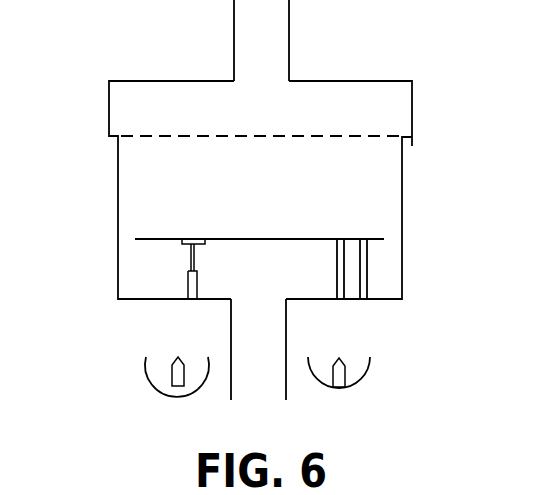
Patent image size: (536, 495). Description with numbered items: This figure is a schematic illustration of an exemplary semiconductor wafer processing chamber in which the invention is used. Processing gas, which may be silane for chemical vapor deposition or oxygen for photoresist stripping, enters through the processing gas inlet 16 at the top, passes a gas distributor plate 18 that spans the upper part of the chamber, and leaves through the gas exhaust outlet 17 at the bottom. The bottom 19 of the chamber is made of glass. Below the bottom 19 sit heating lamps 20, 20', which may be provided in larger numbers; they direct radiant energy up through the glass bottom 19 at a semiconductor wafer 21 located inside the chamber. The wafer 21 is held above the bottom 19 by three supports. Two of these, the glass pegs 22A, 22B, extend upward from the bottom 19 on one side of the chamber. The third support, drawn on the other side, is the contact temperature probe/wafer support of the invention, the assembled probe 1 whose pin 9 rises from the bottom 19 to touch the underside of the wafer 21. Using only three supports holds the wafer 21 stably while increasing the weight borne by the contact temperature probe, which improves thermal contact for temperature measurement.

The processing gas inlet 16 is at (290, 18).
The gas distributor plate 18 is at (358, 137).
The semiconductor wafer 21 is at (156, 238).
The membrane plate 1 is at (181, 245).
The pin 9 is at (190, 273).
The glass peg support 22A is at (337, 250).
The glass peg support 22B is at (362, 268).
The chamber bottom 19 is at (325, 300).
The gas exhaust outlet 17 is at (287, 339).
The heating lamp 20 is at (140, 377).
The heating lamp 20' is at (398, 375).